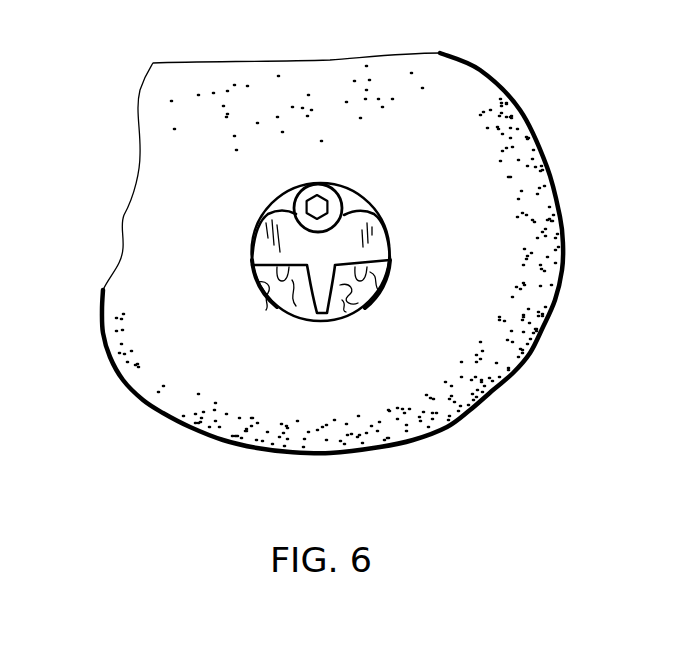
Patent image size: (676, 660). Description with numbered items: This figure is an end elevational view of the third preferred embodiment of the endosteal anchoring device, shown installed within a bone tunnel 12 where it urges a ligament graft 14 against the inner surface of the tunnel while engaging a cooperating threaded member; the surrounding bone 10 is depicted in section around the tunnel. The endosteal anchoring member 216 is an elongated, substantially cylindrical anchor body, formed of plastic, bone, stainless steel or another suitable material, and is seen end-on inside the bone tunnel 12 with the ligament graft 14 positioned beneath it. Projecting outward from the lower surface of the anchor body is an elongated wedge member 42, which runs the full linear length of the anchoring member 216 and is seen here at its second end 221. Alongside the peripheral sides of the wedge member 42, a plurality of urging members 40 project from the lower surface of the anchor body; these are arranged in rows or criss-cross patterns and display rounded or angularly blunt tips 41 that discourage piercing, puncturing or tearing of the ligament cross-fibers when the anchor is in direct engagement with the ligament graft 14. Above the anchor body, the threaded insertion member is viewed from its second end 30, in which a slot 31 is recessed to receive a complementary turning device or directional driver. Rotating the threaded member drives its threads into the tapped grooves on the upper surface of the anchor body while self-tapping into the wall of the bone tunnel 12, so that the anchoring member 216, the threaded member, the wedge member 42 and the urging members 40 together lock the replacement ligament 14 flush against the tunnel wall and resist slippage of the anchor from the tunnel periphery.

The bone 10 is at (360, 383).
The bone tunnel 12 is at (262, 205).
The ligament graft 14 is at (350, 297).
The second end of the threaded insertion member 30 is at (318, 185).
The slot 31 is at (290, 191).
The urging members 40 is at (273, 273).
The blunt tips 41 is at (288, 280).
The wedge member 42 is at (320, 315).
The endosteal anchoring member 216 is at (236, 246).
The second end 221 is at (380, 241).